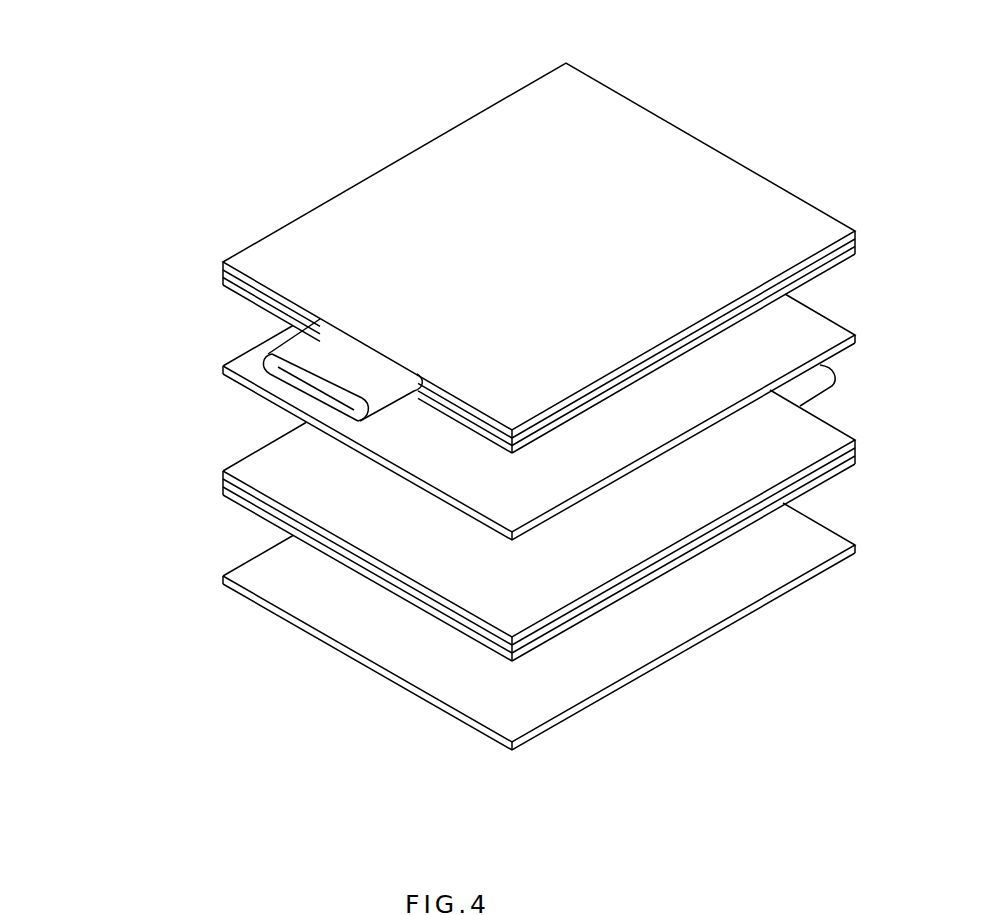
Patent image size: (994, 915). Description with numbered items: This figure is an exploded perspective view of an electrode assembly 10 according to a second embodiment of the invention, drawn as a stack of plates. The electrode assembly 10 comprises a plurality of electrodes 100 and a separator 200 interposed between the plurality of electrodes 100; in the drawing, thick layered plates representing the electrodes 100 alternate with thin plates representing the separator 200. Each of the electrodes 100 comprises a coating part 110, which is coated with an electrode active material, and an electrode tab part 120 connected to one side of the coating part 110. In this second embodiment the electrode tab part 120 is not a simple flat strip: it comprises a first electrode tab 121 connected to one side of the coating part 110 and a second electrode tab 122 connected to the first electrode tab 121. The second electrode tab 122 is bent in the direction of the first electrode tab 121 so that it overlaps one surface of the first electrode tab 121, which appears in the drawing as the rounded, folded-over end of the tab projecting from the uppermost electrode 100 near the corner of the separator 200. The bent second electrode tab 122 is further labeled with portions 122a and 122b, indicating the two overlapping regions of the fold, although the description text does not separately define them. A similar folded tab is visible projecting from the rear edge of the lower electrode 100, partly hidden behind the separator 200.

The electrode assembly 10 is at (373, 93).
The electrode 100 is at (200, 171).
The coating part 110 is at (273, 231).
The electrode tab part 120 is at (100, 385).
The first electrode tab 121 is at (306, 390).
The second electrode tab 122 is at (152, 338).
The first bent part 122a is at (340, 396).
The second bent part 122b is at (300, 362).
The separator 200 is at (818, 327).